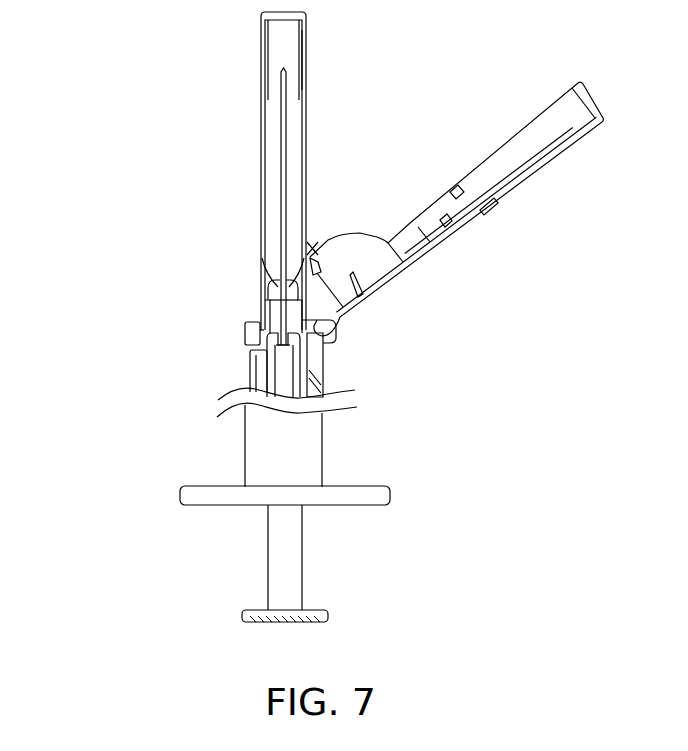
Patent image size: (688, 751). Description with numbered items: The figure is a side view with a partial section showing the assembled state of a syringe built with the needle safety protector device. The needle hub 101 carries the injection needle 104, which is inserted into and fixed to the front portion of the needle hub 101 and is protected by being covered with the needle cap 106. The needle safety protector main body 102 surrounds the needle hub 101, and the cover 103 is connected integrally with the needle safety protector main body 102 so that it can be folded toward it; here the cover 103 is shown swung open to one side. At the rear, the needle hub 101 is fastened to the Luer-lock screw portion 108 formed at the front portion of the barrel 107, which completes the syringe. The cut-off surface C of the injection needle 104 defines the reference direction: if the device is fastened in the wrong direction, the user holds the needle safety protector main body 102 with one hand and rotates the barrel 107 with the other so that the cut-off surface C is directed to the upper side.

The needle hub 101 is at (262, 259).
The needle safety protector main body 102 is at (247, 338).
The cover 103 is at (500, 225).
The injection needle 104 is at (280, 150).
The needle cap 106 is at (262, 85).
The barrel 107 is at (232, 432).
The Luer-lock screw portion 108 is at (253, 365).
The cut-off surface C is at (307, 78).